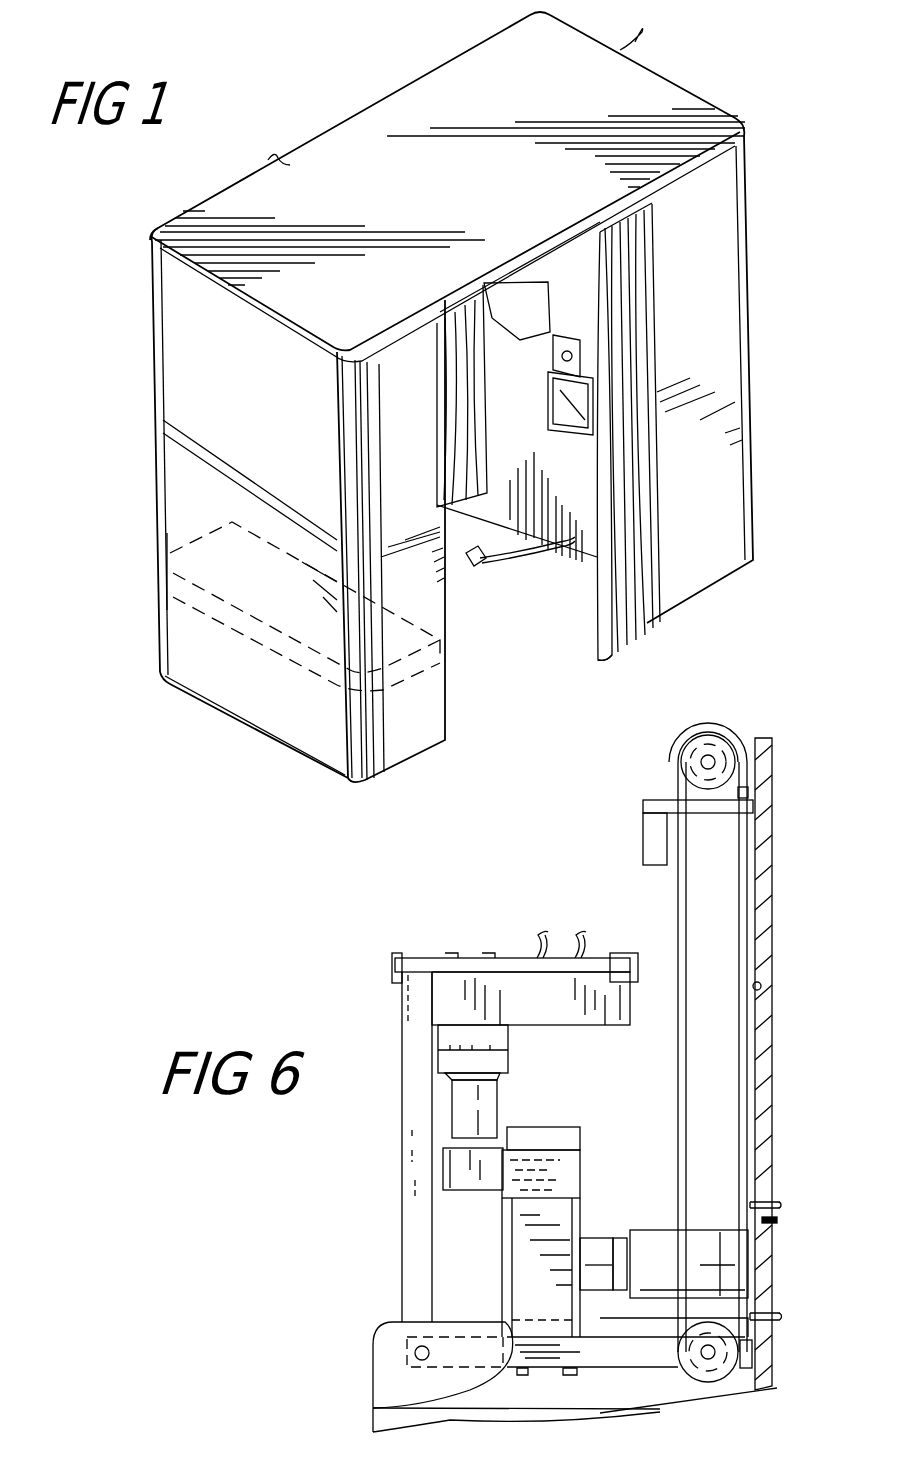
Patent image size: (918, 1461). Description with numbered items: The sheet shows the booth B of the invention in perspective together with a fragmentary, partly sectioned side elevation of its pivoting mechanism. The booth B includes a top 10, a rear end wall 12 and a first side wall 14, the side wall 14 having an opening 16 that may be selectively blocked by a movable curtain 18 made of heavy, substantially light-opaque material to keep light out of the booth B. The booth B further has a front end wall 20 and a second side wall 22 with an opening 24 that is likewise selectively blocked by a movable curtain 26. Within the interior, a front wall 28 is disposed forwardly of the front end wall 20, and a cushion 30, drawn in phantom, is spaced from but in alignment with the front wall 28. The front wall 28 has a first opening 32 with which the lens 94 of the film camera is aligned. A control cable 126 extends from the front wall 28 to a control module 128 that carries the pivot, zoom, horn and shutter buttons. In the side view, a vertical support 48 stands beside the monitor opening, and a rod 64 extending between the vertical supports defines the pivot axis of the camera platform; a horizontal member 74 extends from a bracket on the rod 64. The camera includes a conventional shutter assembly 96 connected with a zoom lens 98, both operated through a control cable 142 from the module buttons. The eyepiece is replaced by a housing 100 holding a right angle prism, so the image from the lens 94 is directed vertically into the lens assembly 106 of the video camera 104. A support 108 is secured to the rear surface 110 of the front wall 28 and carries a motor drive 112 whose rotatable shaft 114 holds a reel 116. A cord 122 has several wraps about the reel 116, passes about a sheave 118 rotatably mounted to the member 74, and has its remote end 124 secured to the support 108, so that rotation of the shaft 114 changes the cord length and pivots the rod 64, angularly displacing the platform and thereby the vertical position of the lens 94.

In FIG. 1, the top 10 is at (665, 100).
In FIG. 1, the rear end wall 12 is at (290, 740).
In FIG. 1, the first side wall 14 is at (693, 585).
In FIG. 1, the opening 16 is at (440, 624).
In FIG. 1, the movable curtain 18 is at (604, 655).
In FIG. 1, the front end wall 20 is at (598, 35).
In FIG. 1, the second side wall 22 is at (278, 160).
In FIG. 1, the opening 24 is at (478, 370).
In FIG. 1, the movable curtain 26 is at (455, 490).
In FIG. 1, the front wall 28 is at (542, 510).
In FIG. 6, the front wall 28 is at (767, 912).
In FIG. 1, the cushion 30 is at (233, 543).
In FIG. 6, the first opening 32 is at (780, 1228).
In FIG. 6, the vertical support 48 is at (382, 1360).
In FIG. 6, the rod 64 is at (423, 1360).
In FIG. 6, the horizontal member 74 is at (598, 1357).
In FIG. 6, the lens 94 is at (502, 1248).
In FIG. 6, the shutter assembly 96 is at (612, 1238).
In FIG. 6, the zoom lens 98 is at (702, 1245).
In FIG. 6, the housing 100 is at (468, 1190).
In FIG. 6, the video camera 104 is at (570, 1025).
In FIG. 6, the lens assembly 106 is at (540, 1080).
In FIG. 6, the support 108 is at (648, 800).
In FIG. 6, the rear surface 110 is at (762, 986).
In FIG. 6, the motor drive 112 is at (697, 728).
In FIG. 6, the rotatable shaft 114 is at (712, 760).
In FIG. 6, the reel 116 is at (712, 748).
In FIG. 6, the sheave 118 is at (716, 1378).
In FIG. 6, the cord 122 is at (695, 928).
In FIG. 6, the remote end 124 is at (750, 792).
In FIG. 1, the control cable 126 is at (524, 560).
In FIG. 1, the control module 128 is at (481, 570).
In FIG. 6, the control cable 142 is at (490, 1302).
In FIG. 1, the booth B is at (310, 125).